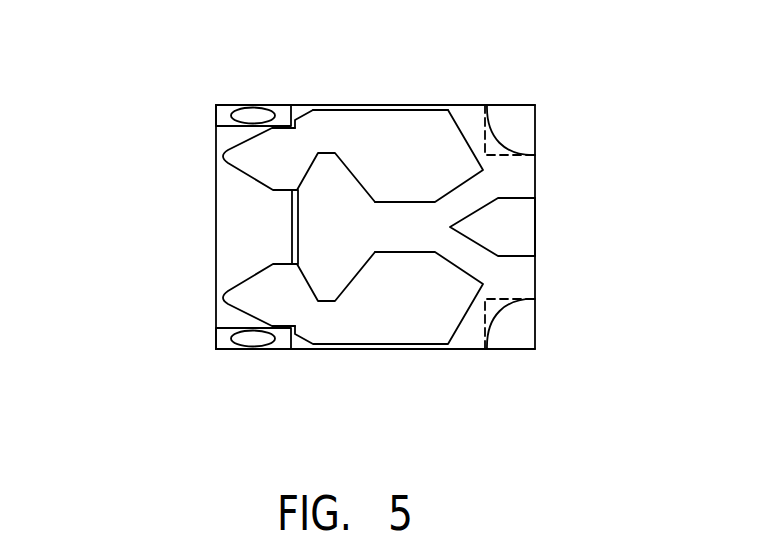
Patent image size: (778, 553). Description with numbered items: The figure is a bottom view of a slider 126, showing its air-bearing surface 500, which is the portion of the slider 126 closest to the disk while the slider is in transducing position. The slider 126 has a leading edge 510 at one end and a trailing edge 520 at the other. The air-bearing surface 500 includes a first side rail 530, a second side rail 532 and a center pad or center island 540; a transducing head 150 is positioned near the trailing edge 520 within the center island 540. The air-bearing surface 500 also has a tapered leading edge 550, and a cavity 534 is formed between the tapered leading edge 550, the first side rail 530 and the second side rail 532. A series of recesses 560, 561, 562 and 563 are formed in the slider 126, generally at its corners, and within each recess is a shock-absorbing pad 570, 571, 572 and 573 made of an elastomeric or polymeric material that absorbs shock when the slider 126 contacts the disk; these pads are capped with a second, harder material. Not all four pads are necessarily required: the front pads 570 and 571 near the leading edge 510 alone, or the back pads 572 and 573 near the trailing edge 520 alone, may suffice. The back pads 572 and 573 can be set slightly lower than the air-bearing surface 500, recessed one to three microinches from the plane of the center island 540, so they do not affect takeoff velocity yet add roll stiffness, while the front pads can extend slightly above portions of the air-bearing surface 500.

The air-bearing surface 500 is at (522, 178).
The leading edge 510 is at (215, 205).
The trailing edge 520 is at (535, 282).
The edge portion 150 is at (535, 217).
The slider 126 is at (412, 107).
The first side rail 530 is at (343, 123).
The second side rail 532 is at (378, 326).
The cavity 534 is at (328, 190).
The center pad or center island 540 is at (512, 238).
The tapered leading edge 550 is at (243, 252).
The recess 560 is at (223, 118).
The recess 561 is at (218, 337).
The shock-absorbing pad 570 is at (249, 111).
The shock-absorbing pad 571 is at (253, 343).
The recess 562 is at (487, 313).
The recess 563 is at (485, 136).
The shock-absorbing pad 572 is at (520, 332).
The shock-absorbing pad 573 is at (520, 122).